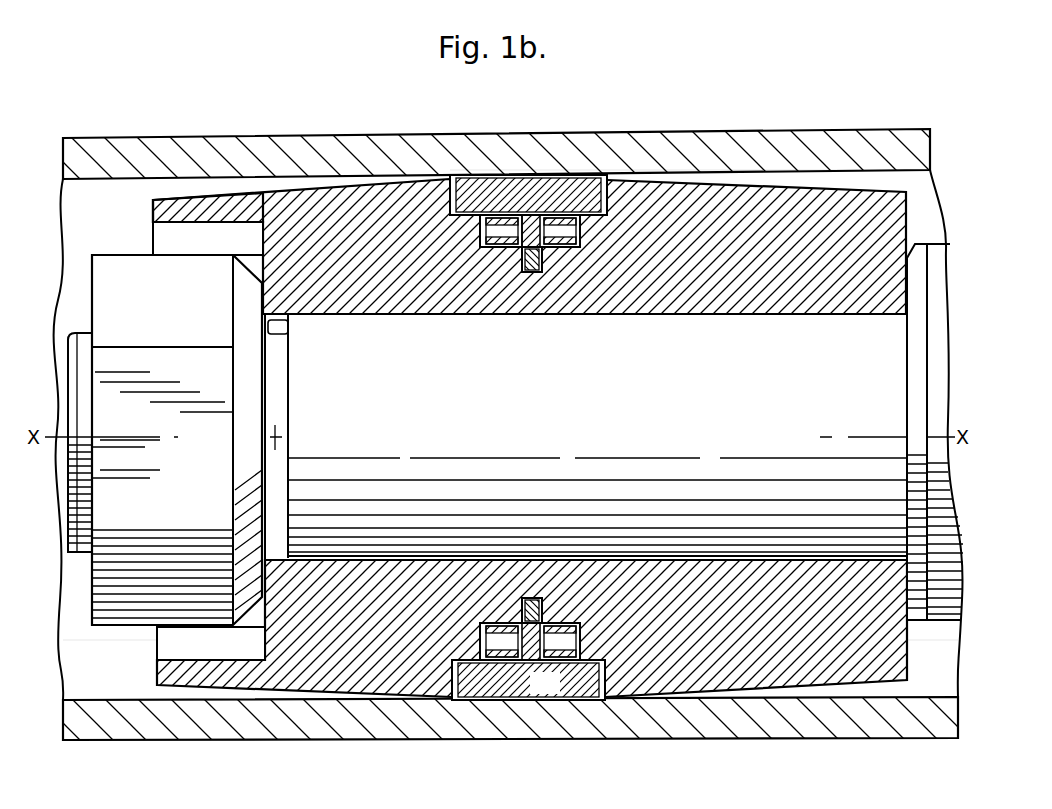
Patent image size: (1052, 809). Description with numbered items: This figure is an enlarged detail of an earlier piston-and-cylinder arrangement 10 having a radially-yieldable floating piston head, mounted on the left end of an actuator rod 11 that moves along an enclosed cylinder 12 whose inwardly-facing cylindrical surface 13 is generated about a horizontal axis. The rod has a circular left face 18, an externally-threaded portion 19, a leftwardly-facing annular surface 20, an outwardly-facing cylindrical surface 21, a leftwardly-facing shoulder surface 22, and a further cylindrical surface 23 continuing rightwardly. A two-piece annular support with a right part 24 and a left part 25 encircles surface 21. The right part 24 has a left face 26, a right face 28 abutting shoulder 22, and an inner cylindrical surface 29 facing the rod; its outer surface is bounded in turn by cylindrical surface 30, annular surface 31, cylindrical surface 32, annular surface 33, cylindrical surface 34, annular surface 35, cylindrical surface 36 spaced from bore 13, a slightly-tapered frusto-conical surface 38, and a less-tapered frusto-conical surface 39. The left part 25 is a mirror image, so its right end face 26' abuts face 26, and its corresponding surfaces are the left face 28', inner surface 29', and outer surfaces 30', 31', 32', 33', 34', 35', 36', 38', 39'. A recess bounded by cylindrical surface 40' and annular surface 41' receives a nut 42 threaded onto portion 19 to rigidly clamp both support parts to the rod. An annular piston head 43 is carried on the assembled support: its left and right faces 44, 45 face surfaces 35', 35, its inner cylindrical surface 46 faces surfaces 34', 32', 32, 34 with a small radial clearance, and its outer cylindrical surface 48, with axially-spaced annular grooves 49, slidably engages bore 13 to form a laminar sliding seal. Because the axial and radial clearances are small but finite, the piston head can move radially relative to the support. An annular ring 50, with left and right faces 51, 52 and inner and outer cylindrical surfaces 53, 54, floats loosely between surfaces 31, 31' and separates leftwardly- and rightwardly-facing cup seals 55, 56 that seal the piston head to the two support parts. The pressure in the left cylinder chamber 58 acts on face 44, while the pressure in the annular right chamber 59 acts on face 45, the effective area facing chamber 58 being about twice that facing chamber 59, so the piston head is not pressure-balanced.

The piston-and-cylinder arrangement 10 is at (746, 162).
The actuator rod 11 is at (948, 236).
The cylinder 12 is at (228, 134).
The cylindrical surface 13 is at (66, 193).
The left face 18 is at (68, 490).
The externally-threaded portion 19 is at (82, 352).
The annular vertical surface 20 is at (288, 333).
The cylindrical surface 21 is at (448, 317).
The shoulder surface 22 is at (886, 314).
The cylindrical surface 23 is at (906, 626).
The support right part 24 is at (742, 324).
The support left part 25 is at (375, 324).
The left face 26 is at (517, 308).
The right end face 26' is at (559, 295).
The right face 28 is at (532, 246).
The left face 28' is at (178, 213).
The cylindrical surface 29 is at (678, 331).
The cylindrical surface 29' is at (415, 333).
The cylindrical surface 30 is at (563, 273).
The cylindrical surface 30' is at (494, 274).
The annular vertical surface 31 is at (569, 263).
The annular vertical surface 31' is at (485, 264).
The cylindrical surface 32 is at (575, 238).
The cylindrical surface 32' is at (475, 239).
The annular vertical surface 33 is at (594, 231).
The annular vertical surface 33' is at (460, 232).
The cylindrical surface 34 is at (567, 224).
The cylindrical surface 34' is at (431, 227).
The annular vertical surface 35 is at (557, 195).
The annular vertical surface 35' is at (415, 195).
The cylindrical surface 36 is at (628, 136).
The cylindrical surface 36' is at (430, 139).
The frusto-conical surface 38 is at (725, 138).
The frusto-conical surface 38' is at (356, 141).
The frusto-conical surface 39 is at (853, 143).
The frusto-conical surface 39' is at (208, 148).
The cylindrical surface 40' is at (208, 238).
The annular vertical surface 41' is at (241, 268).
The nut 42 is at (92, 587).
The piston head 43 is at (535, 708).
The left face 44 is at (447, 698).
The right face 45 is at (620, 698).
The cylindrical surface 46 is at (582, 652).
The cylindrical surface 48 is at (520, 698).
The annular grooves 49 is at (566, 698).
The annular ring 50 is at (512, 603).
The left face 51 is at (520, 616).
The right face 52 is at (548, 622).
The inner cylindrical surface 53 is at (542, 600).
The outer cylindrical surface 54 is at (532, 662).
The cup seal 55 is at (490, 698).
The cup seal 56 is at (606, 675).
The cylinder chamber 58 is at (108, 657).
The annular cylinder chamber 59 is at (942, 657).